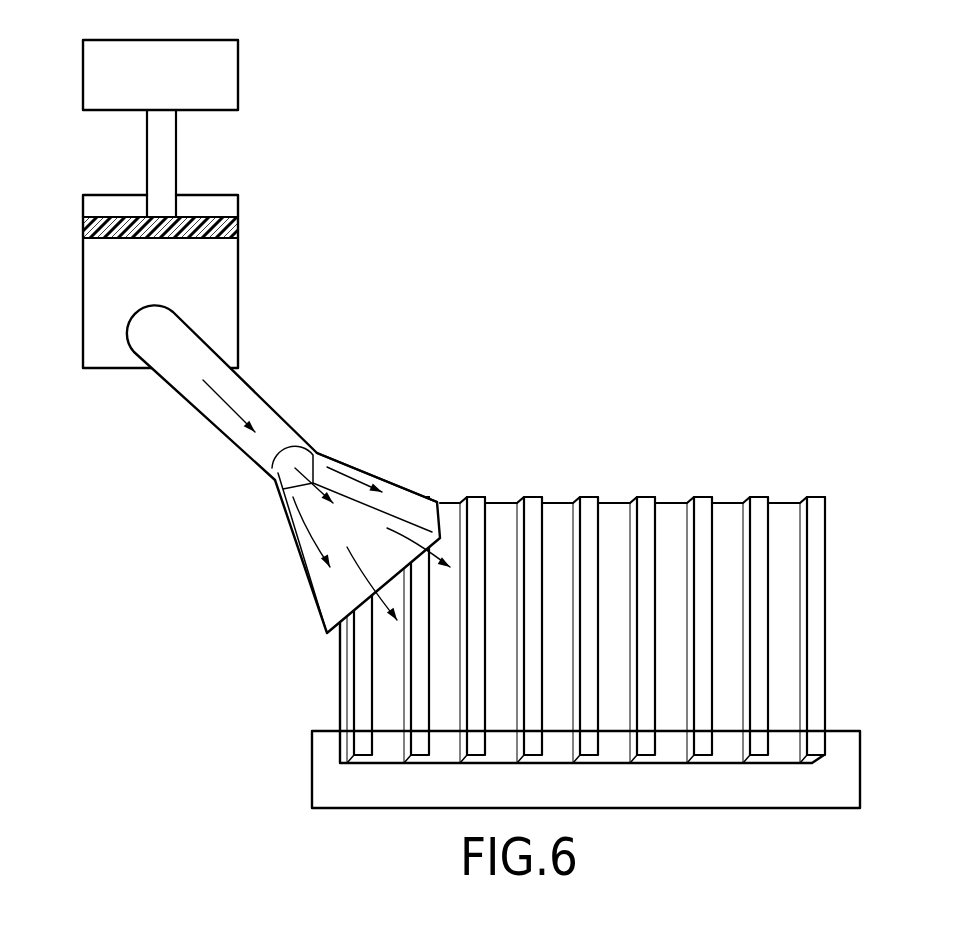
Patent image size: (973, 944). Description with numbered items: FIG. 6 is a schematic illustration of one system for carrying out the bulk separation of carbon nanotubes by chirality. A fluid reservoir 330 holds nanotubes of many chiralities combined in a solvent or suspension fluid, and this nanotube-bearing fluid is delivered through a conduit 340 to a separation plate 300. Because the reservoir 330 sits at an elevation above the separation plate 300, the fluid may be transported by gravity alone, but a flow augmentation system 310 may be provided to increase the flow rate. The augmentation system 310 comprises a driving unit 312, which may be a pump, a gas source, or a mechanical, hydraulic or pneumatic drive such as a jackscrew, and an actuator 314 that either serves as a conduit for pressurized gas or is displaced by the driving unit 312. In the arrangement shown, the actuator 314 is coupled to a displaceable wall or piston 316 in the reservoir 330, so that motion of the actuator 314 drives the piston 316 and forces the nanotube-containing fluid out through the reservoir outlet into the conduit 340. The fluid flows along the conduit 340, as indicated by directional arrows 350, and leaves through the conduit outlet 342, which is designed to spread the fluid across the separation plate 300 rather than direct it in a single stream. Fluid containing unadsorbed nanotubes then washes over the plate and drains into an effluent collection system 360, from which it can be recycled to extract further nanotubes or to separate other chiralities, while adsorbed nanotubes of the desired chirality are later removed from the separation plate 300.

The separation plate 300 is at (825, 498).
The flow augmentation system 310 is at (277, 204).
The driving unit 312 is at (238, 75).
The actuator 314 is at (176, 152).
The piston 316 is at (217, 217).
The fluid reservoir 330 is at (238, 295).
The conduit 340 is at (302, 469).
The conduit outlet 342 is at (415, 495).
The directional arrows 350 is at (331, 496).
The effluent collection system 360 is at (860, 765).